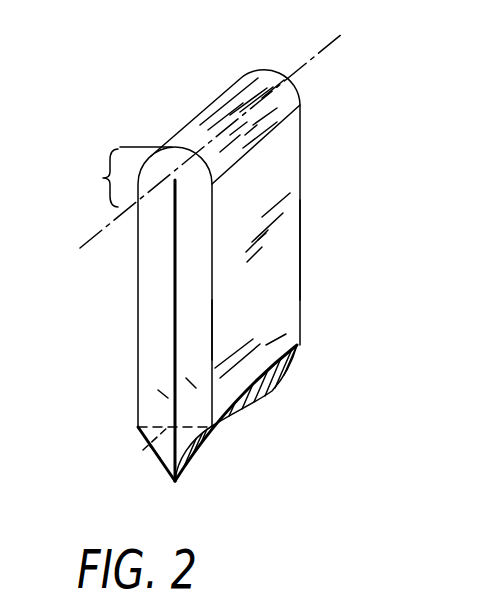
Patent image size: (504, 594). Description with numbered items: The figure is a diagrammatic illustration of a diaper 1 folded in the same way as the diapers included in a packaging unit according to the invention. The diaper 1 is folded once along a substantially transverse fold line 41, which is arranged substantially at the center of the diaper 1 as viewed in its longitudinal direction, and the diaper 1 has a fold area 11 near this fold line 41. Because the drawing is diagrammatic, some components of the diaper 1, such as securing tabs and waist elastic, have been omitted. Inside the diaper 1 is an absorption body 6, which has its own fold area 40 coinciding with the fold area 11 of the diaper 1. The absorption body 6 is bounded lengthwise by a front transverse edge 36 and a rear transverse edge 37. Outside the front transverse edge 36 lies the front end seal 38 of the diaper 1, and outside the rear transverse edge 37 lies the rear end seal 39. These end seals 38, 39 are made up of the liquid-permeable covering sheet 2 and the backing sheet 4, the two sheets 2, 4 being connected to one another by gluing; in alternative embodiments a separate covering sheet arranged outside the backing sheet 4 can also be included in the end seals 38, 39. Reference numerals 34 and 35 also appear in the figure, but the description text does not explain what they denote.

The diaper 1 is at (313, 110).
The liquid-permeable covering sheet 2 is at (185, 340).
The backing sheet 4 is at (253, 278).
The absorption body 6 is at (250, 248).
The fold area 11 is at (97, 184).
The groove edge 34 is at (196, 387).
The groove bottom 35 is at (168, 396).
The front transverse edge 36 is at (163, 468).
The rear transverse edge 37 is at (160, 452).
The front end seal 38 is at (276, 390).
The rear end seal 39 is at (157, 431).
The fold area 40 is at (170, 160).
The fold line 41 is at (308, 62).